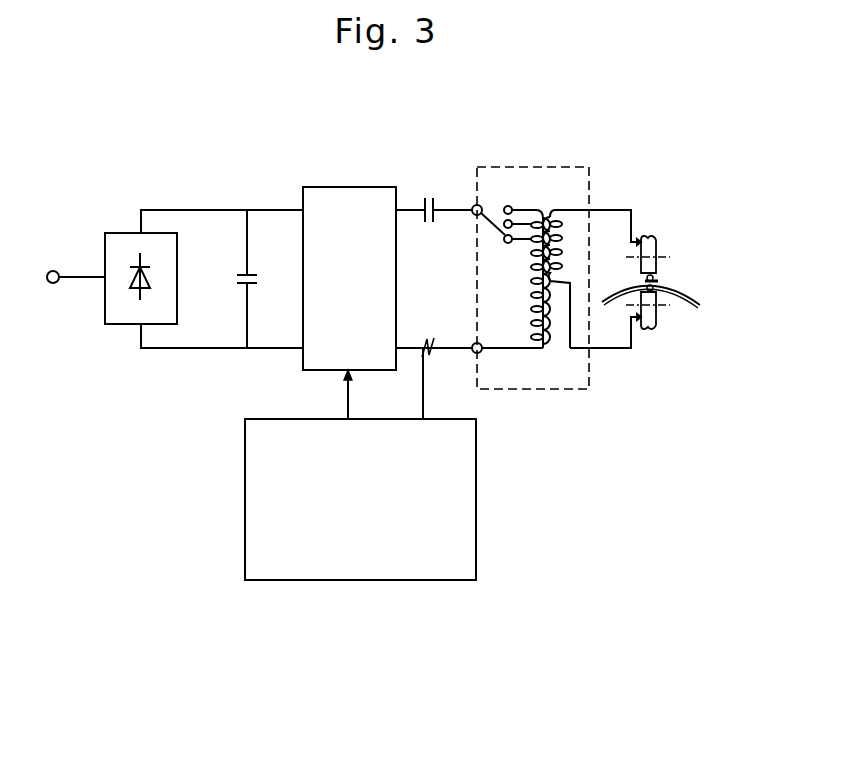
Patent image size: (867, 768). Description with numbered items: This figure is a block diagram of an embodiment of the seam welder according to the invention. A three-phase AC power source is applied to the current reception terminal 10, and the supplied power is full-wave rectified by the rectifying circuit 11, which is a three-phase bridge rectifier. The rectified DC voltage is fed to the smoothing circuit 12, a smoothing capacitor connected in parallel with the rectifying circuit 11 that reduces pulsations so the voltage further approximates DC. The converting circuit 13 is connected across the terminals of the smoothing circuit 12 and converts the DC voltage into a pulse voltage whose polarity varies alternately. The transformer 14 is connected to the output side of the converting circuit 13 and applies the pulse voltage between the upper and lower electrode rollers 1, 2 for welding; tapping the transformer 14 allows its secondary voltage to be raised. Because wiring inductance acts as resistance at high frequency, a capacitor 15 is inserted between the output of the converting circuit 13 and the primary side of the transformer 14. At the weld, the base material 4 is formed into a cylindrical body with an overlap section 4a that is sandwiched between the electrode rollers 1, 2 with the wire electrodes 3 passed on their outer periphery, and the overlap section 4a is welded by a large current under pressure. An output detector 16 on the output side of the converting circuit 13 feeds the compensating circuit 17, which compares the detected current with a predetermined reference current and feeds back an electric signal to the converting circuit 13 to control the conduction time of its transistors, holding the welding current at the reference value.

The upper electrode roller 1 is at (660, 240).
The lower electrode roller 2 is at (660, 322).
The wire electrode 3 is at (655, 277).
The base material 4 is at (616, 293).
The overlap section 4a is at (656, 283).
The current reception terminal 10 is at (53, 270).
The rectifying circuit 11 is at (127, 237).
The smoothing circuit 12 is at (230, 283).
The converting circuit 13 is at (331, 193).
The transformer 14 is at (550, 197).
The capacitor 15 is at (431, 196).
The output detector 16 is at (429, 362).
The compensating circuit 17 is at (357, 570).